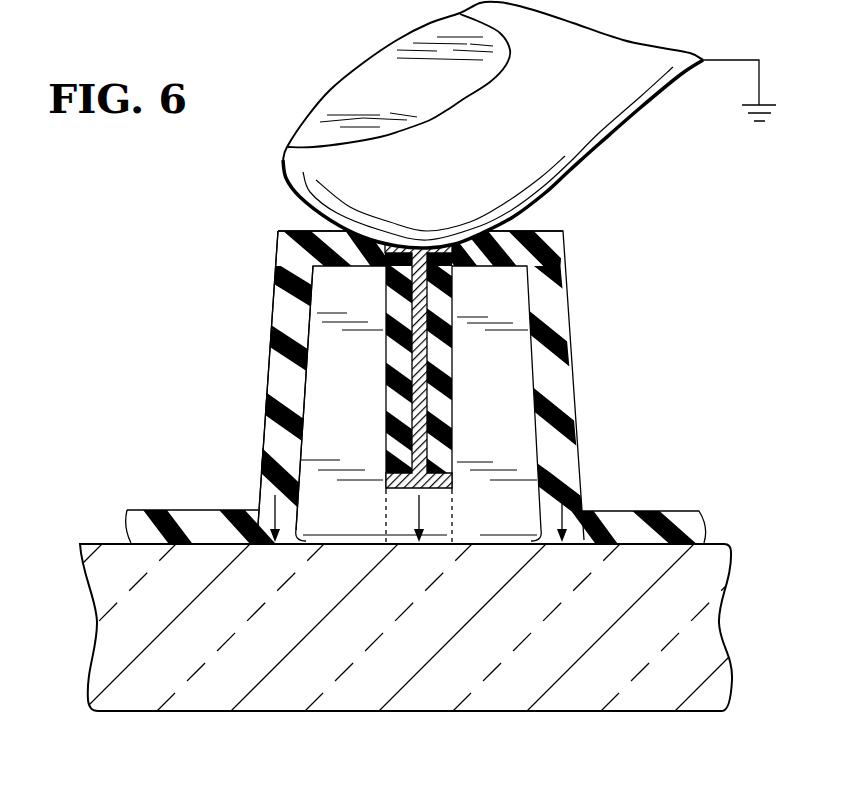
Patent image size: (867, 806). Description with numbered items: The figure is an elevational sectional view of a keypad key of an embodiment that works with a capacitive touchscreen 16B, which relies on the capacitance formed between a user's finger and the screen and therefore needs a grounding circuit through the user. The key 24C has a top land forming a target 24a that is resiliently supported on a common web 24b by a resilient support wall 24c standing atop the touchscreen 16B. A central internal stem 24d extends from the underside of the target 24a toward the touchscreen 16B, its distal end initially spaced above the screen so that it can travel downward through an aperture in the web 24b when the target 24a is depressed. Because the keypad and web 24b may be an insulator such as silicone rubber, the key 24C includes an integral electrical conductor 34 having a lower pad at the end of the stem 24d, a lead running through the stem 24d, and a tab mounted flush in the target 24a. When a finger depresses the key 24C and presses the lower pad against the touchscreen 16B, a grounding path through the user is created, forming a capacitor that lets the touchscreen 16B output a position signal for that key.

The capacitive touchscreen 16B is at (423, 698).
The target 24a is at (321, 233).
The web 24b is at (186, 509).
The resilient support wall 24c is at (272, 310).
The key 24C is at (580, 320).
The central internal stem 24d is at (386, 425).
The electrical conductor 34 is at (421, 408).